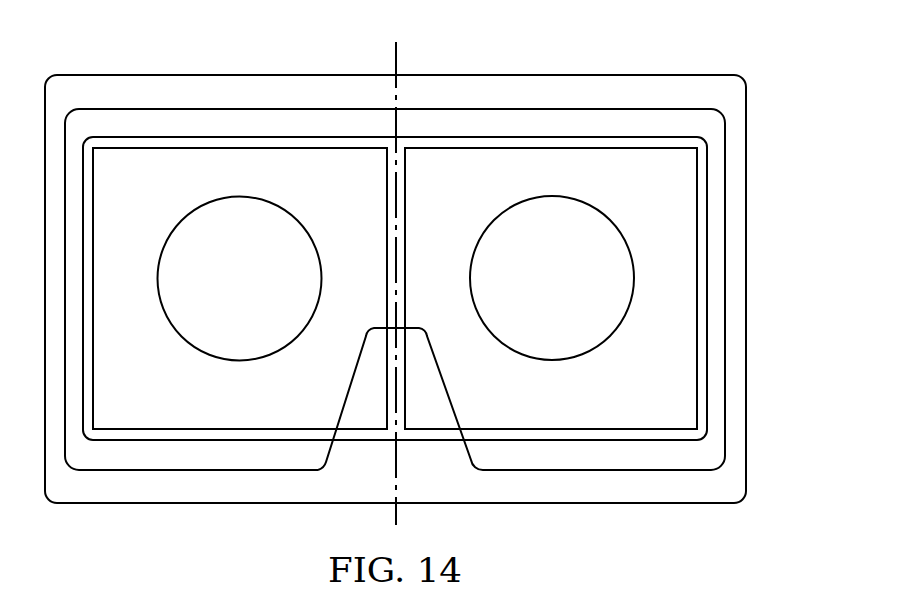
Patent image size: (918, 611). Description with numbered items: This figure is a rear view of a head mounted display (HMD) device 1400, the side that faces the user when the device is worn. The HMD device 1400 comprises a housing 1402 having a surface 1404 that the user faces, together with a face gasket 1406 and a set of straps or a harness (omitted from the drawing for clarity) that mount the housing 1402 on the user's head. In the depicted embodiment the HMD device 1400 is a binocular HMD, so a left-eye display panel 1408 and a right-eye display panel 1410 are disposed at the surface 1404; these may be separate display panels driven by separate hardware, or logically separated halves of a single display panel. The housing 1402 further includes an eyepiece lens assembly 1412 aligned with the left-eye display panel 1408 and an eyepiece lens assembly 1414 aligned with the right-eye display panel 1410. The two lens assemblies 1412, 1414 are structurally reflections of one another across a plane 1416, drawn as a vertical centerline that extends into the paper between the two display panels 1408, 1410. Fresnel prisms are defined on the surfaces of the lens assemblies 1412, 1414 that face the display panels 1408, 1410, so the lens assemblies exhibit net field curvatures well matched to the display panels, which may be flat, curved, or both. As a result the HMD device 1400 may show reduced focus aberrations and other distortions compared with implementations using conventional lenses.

The head mounted display device 1400 is at (576, 74).
The housing 1402 is at (748, 290).
The surface 1404 is at (218, 471).
The face gasket 1406 is at (596, 460).
The left-eye display panel 1408 is at (347, 422).
The right-eye display panel 1410 is at (443, 422).
The eyepiece lens assembly 1412 is at (210, 291).
The eyepiece lens assembly 1414 is at (524, 291).
The plane 1416 is at (393, 60).